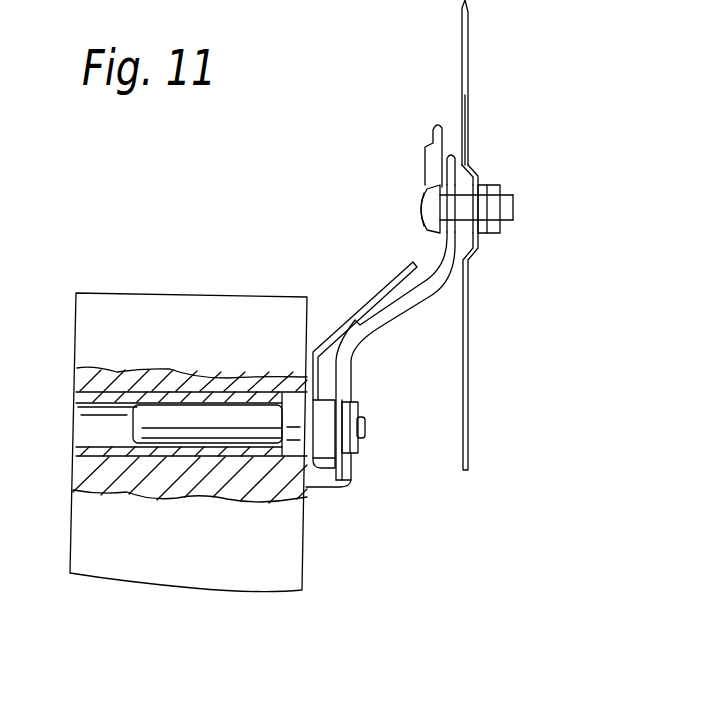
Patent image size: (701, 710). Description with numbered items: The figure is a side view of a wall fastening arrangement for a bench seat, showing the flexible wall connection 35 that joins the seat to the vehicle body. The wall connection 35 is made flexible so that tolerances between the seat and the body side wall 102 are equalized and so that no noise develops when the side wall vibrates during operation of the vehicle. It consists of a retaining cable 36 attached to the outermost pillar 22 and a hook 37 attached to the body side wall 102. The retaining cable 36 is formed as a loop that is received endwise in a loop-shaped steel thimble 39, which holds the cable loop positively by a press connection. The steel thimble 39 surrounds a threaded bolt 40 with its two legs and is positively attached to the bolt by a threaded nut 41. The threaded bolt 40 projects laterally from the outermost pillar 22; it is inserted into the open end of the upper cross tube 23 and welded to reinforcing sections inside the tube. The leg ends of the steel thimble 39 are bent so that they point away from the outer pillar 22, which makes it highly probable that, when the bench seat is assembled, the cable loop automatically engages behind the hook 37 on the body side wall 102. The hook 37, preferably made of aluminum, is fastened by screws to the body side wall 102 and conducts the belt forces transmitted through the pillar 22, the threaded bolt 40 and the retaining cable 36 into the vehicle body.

The pillar 22 is at (193, 313).
The upper cross tube 23 is at (117, 403).
The wall connection 35 is at (341, 293).
The retaining cable 36 is at (436, 241).
The hook 37 is at (433, 145).
The steel thimble 39 is at (347, 337).
The threaded bolt 40 is at (200, 436).
The threaded nut 41 is at (355, 450).
The body side wall 102 is at (503, 0).